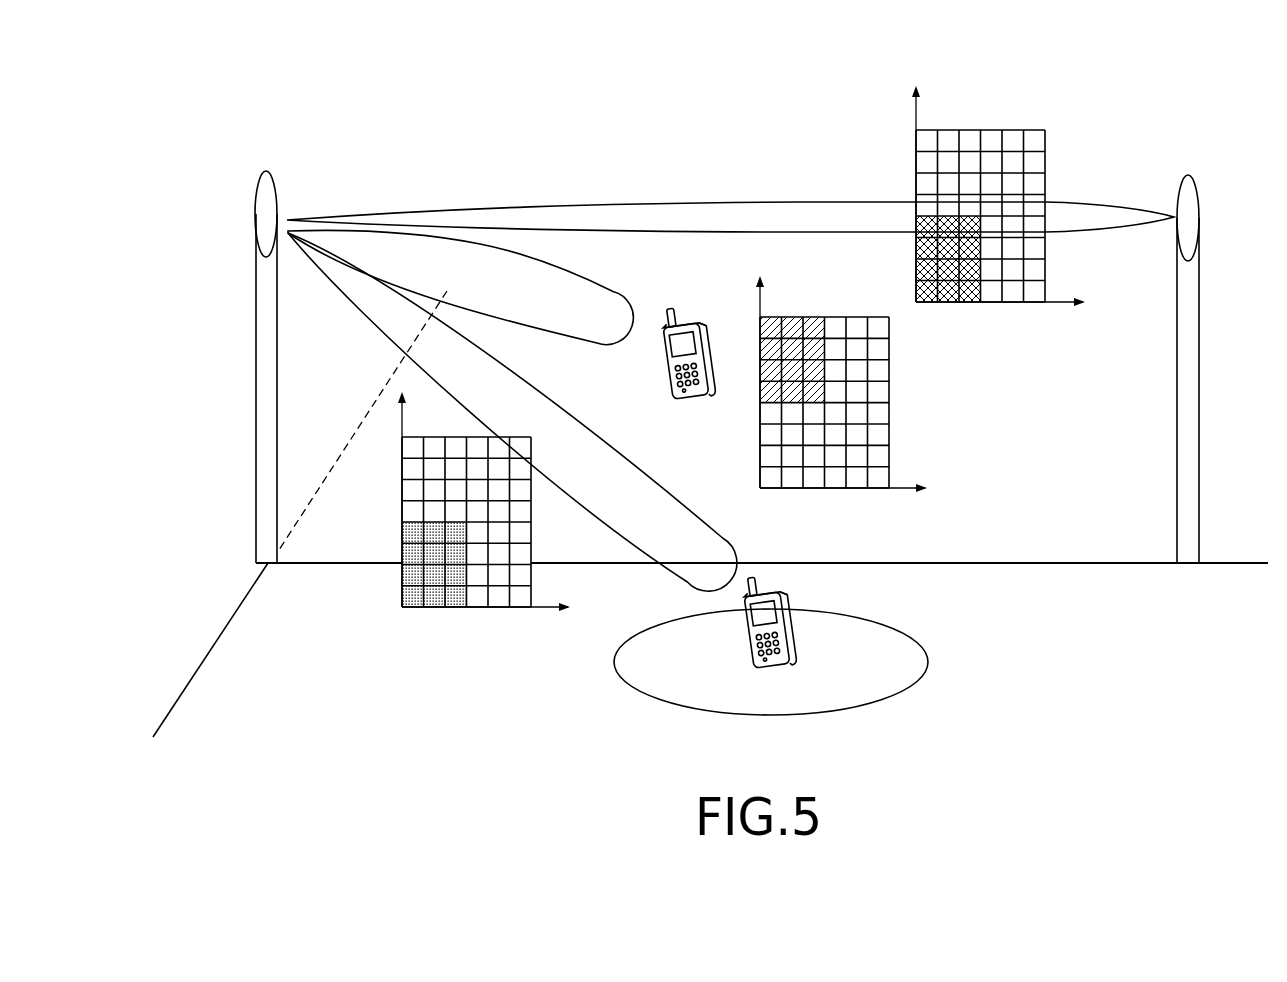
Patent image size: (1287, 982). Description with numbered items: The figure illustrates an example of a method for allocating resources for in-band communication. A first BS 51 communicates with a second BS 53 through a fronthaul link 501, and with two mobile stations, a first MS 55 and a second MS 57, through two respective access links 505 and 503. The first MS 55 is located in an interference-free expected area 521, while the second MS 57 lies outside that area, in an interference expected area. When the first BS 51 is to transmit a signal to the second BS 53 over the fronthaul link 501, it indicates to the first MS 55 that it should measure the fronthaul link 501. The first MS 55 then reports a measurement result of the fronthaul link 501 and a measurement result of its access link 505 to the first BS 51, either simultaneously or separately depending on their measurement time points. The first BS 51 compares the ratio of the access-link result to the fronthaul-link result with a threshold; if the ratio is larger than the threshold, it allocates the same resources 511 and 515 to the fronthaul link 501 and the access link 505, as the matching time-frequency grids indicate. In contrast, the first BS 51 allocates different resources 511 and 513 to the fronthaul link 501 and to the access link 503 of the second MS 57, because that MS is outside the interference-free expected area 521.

The first BS 51 is at (255, 214).
The second BS 53 is at (1200, 216).
The first MS 55 is at (794, 632).
The second MS 57 is at (713, 316).
The fronthaul link 501 is at (782, 202).
The access link 503 is at (617, 297).
The access link 505 is at (682, 493).
The resources 511 is at (1046, 150).
The resources 513 is at (890, 380).
The resources 515 is at (532, 541).
The interference-free expected area 521 is at (929, 661).